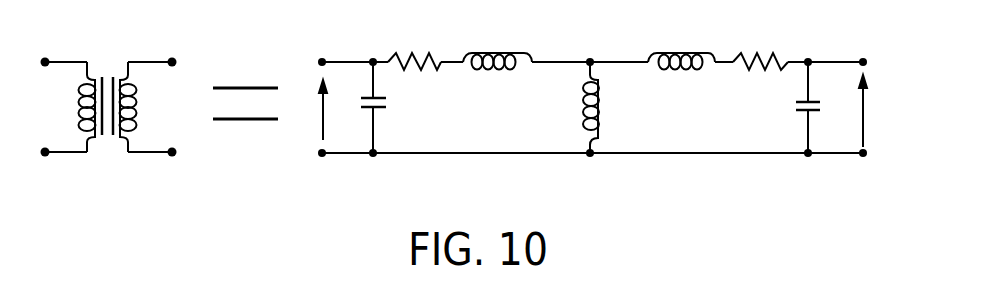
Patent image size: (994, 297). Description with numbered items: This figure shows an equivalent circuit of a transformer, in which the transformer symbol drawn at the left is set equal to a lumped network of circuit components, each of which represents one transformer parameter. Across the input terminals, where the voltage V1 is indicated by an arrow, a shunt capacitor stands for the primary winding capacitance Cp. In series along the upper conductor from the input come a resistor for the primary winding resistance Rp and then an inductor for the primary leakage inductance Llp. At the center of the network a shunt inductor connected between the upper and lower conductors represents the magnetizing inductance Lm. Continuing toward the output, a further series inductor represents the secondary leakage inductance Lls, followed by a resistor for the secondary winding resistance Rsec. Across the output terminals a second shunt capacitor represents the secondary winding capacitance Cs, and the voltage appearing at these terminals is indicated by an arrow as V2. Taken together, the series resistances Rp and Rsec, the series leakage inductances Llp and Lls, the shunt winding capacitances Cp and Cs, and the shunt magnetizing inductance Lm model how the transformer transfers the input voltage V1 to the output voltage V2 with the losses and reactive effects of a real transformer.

The primary winding resistance Rp is at (414, 39).
The primary leakage inductance Llp is at (497, 39).
The secondary leakage inductance Lls is at (680, 40).
The secondary winding resistance Rsec is at (761, 40).
The primary winding capacitance Cp is at (390, 107).
The magnetizing inductance Lm is at (612, 107).
The secondary winding capacitance Cs is at (790, 107).
The primary voltage V1 is at (309, 110).
The secondary voltage V2 is at (881, 111).